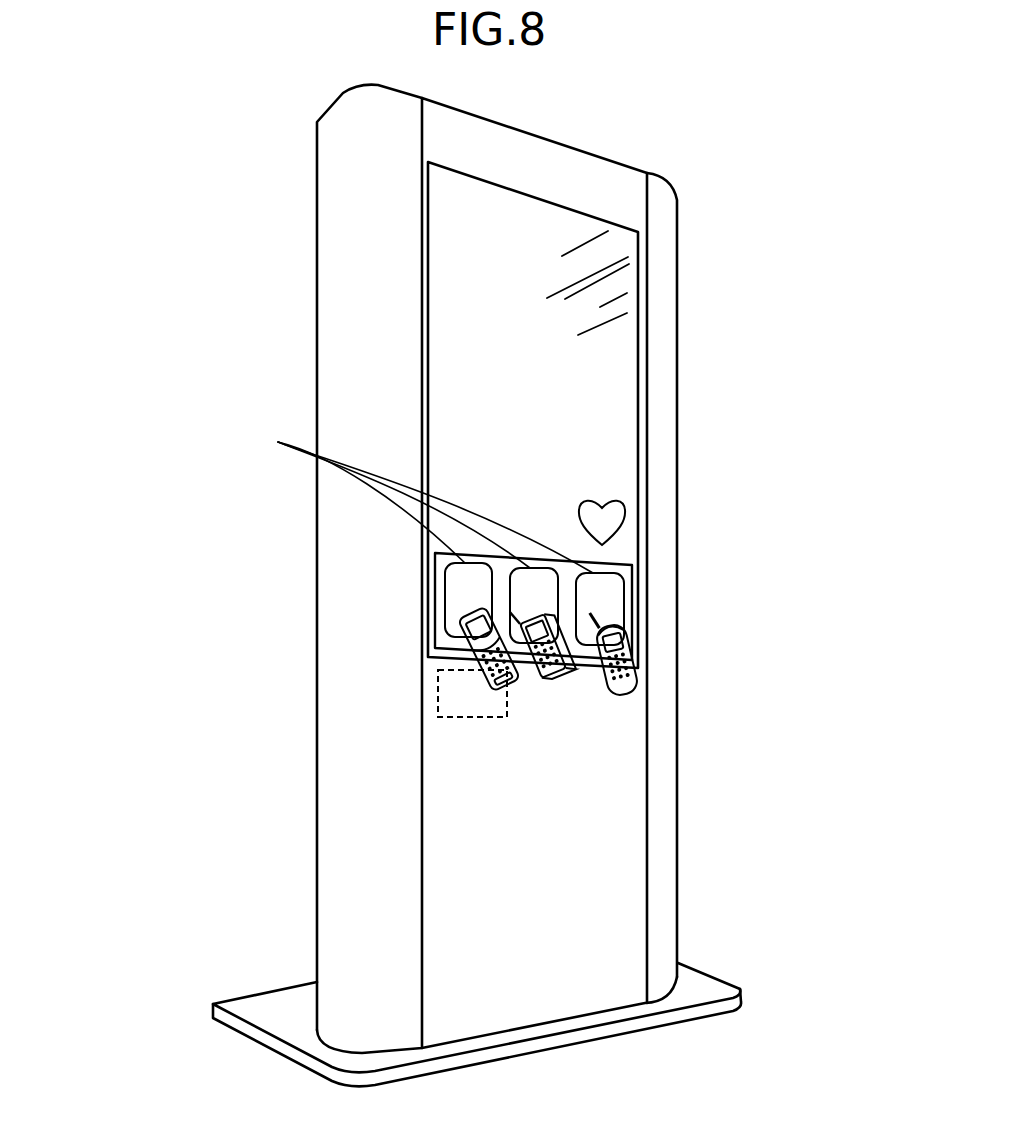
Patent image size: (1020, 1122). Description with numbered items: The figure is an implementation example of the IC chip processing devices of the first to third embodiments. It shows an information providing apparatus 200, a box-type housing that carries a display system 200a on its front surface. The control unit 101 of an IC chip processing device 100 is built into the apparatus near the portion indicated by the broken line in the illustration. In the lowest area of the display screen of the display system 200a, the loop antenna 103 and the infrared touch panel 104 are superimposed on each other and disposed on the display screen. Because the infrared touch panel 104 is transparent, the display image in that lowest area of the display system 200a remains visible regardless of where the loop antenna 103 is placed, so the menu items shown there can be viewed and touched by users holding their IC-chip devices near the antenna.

The information providing apparatus 200 is at (677, 213).
The display system 200a is at (638, 350).
The infrared touch panel 104 is at (632, 566).
The loop antenna 103 is at (623, 603).
The control unit 101 is at (437, 688).
The IC chip processing device 100 is at (278, 721).